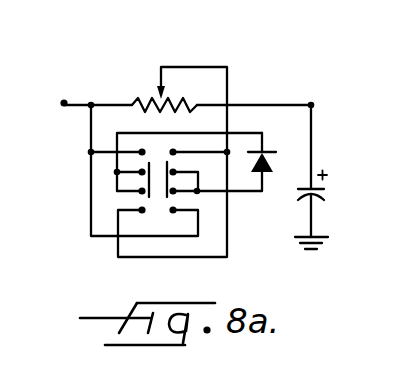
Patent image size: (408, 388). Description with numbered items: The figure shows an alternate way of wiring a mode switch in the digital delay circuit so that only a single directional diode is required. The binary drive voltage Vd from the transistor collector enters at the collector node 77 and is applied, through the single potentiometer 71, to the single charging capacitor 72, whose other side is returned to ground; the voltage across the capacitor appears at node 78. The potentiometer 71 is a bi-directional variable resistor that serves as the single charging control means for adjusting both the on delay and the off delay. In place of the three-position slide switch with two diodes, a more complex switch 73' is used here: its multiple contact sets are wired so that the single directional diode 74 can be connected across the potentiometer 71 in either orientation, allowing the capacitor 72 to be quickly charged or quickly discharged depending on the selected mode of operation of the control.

The collector node 77 is at (64, 100).
The potentiometer 71 is at (142, 100).
The output terminal 78 is at (311, 105).
The switch 73' is at (140, 183).
The directional diode 74 is at (271, 164).
The charging capacitor 72 is at (325, 194).